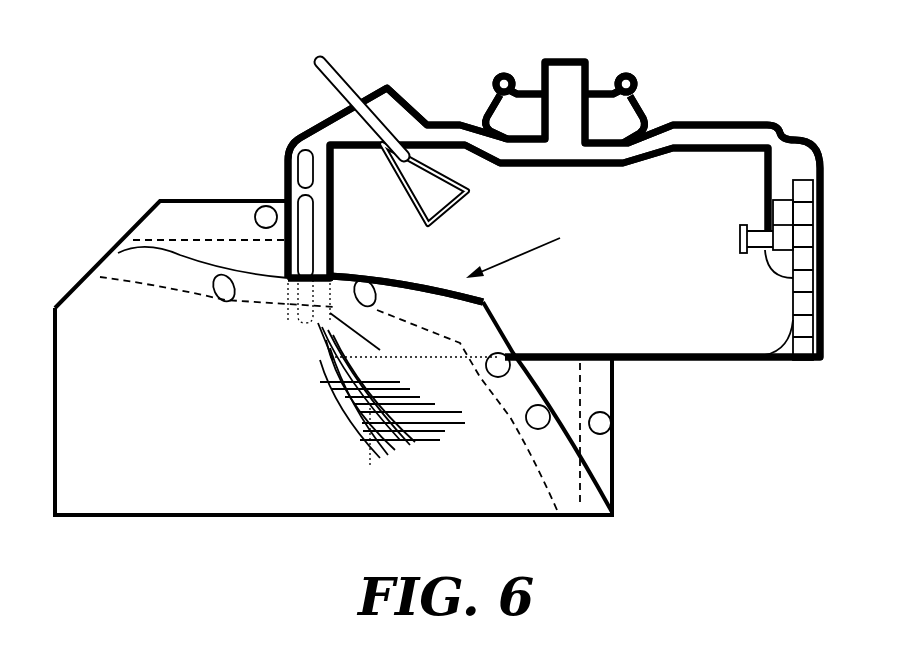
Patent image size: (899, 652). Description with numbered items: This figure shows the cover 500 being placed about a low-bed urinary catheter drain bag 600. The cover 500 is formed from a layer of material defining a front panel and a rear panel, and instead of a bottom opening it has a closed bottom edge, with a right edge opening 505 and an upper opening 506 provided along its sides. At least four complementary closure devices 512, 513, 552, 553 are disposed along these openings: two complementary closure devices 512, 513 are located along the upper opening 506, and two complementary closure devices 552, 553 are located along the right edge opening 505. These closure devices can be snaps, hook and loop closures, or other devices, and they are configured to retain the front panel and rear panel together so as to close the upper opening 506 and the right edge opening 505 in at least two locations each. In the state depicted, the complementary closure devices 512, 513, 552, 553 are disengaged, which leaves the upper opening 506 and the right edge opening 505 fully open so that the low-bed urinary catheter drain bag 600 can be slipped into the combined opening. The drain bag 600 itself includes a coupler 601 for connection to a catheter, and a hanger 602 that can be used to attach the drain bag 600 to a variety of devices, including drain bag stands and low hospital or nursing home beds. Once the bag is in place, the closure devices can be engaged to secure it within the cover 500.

The cover 500 is at (40, 270).
The right edge opening 505 is at (605, 458).
The upper opening 506 is at (222, 222).
The complementary closure device 512 is at (228, 290).
The complementary closure device 513 is at (366, 292).
The complementary closure device 552 is at (502, 365).
The complementary closure device 553 is at (535, 417).
The low-bed urinary catheter drain bag 600 is at (682, 125).
The coupler 601 is at (322, 72).
The hanger 602 is at (600, 88).